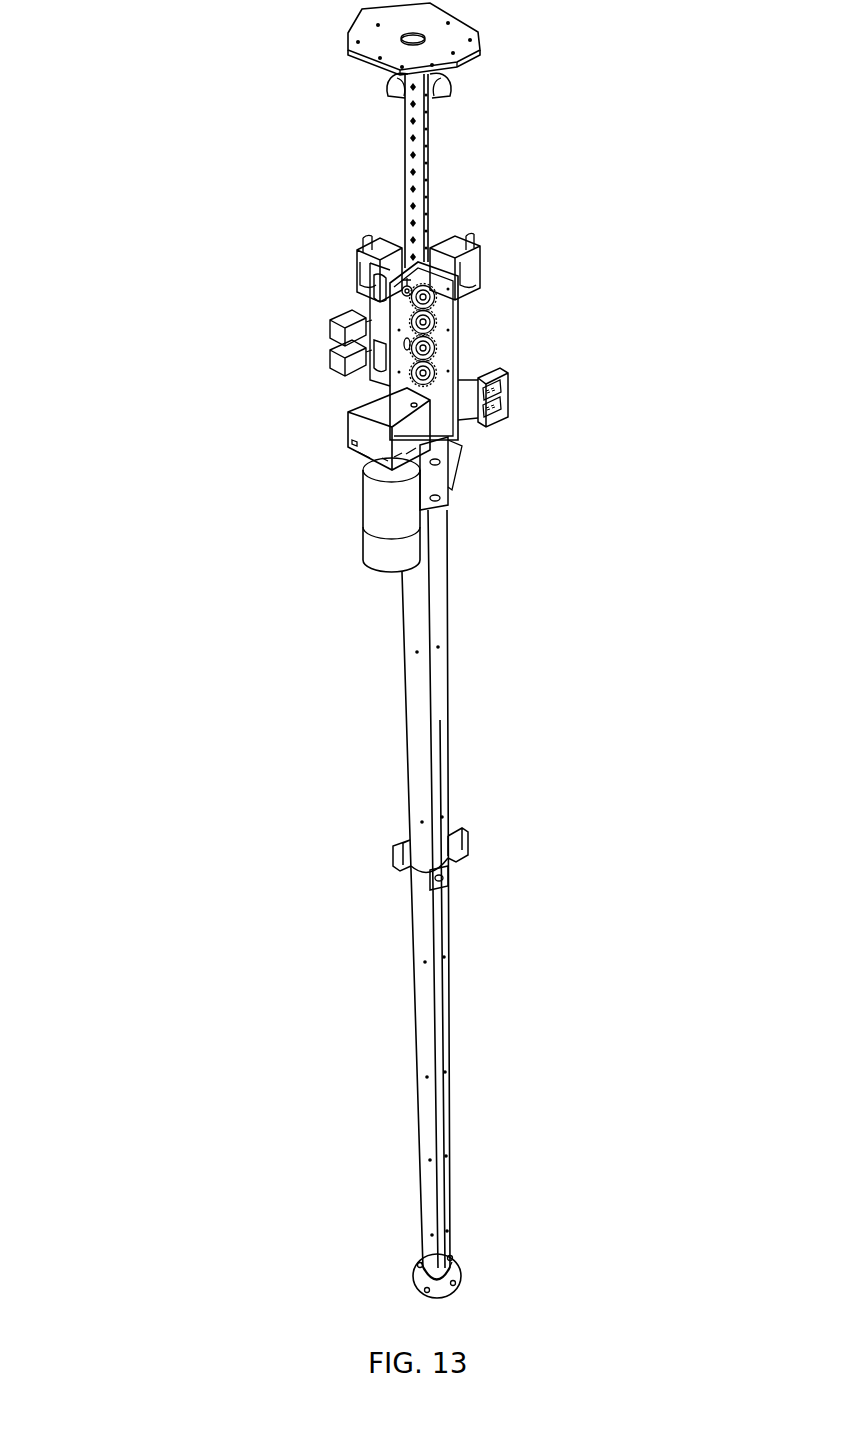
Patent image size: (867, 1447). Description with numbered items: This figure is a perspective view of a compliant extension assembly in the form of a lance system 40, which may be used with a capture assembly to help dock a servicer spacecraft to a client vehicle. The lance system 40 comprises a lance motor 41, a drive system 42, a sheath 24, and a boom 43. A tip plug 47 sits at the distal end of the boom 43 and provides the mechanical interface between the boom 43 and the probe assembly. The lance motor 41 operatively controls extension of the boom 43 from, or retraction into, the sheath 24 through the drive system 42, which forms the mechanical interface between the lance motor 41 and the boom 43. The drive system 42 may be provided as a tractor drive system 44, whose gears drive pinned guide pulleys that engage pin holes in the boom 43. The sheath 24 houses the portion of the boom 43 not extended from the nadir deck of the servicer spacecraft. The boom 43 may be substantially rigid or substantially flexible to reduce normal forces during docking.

The lance system 40 is at (213, 664).
The tip plug 47 is at (335, 38).
The boom 43 is at (450, 148).
The tractor drive system 44 is at (488, 313).
The drive system 42 is at (533, 378).
The lance motor 41 is at (327, 494).
The sheath 24 is at (462, 786).